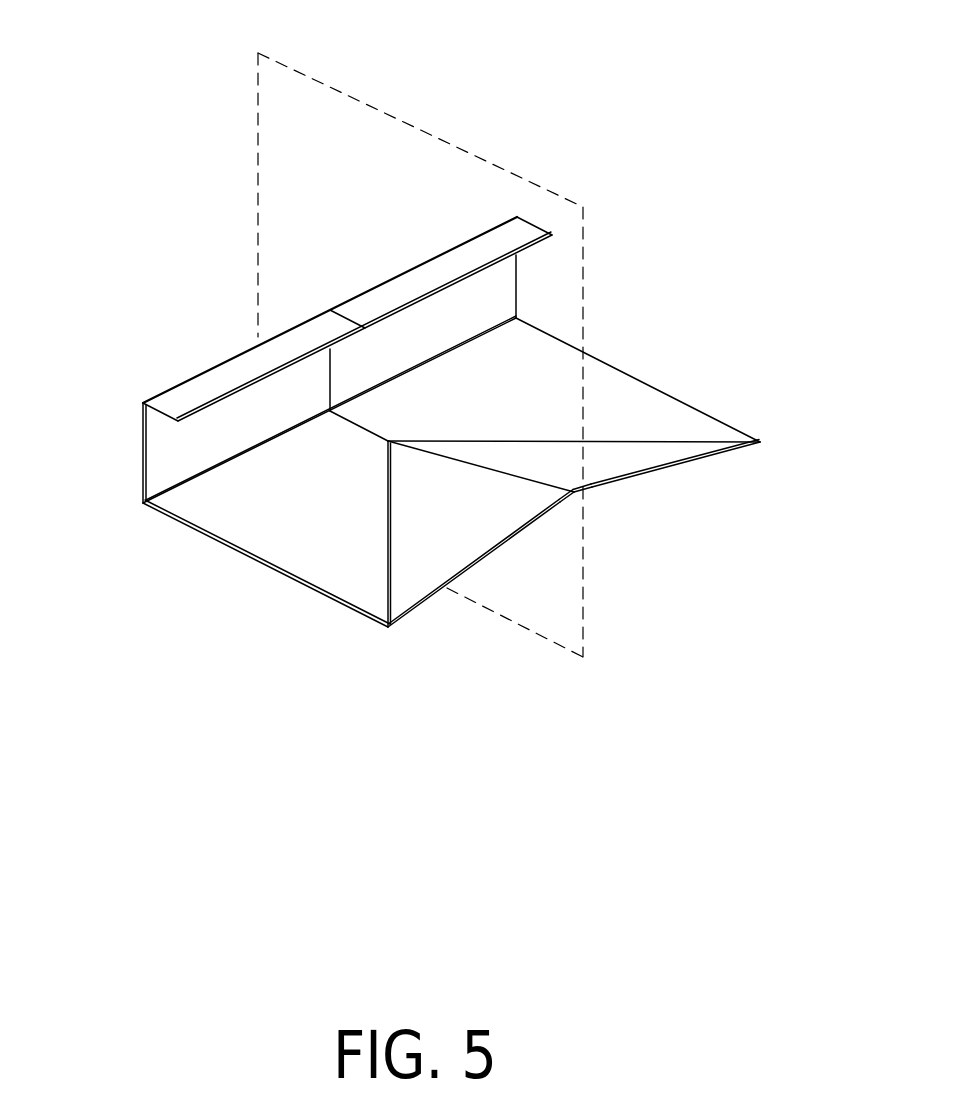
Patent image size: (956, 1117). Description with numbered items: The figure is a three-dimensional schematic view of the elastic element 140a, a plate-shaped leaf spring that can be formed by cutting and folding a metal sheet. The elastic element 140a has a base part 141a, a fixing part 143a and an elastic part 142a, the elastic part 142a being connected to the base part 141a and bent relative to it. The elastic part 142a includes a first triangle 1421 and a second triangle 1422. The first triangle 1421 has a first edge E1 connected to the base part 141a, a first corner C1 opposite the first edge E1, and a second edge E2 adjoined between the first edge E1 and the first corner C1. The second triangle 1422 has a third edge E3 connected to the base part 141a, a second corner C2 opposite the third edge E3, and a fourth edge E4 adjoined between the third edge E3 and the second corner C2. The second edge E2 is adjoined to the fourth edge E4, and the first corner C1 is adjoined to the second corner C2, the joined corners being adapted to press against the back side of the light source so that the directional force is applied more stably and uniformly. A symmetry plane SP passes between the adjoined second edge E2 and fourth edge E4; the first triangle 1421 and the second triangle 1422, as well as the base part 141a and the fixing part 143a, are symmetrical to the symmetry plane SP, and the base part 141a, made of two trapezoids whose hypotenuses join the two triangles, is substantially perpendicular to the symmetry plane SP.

The elastic element 140a is at (105, 100).
The base part 141a is at (280, 547).
The elastic part 142a is at (742, 540).
The first triangle 1421 is at (487, 522).
The second triangle 1422 is at (610, 465).
The fixing part 143a is at (182, 401).
The symmetry plane SP is at (328, 83).
The first edge E1 is at (392, 560).
The second edge E2 is at (463, 461).
The third edge E3 is at (630, 440).
The fourth edge E4 is at (507, 473).
The first corner C1 is at (572, 496).
The second corner C2 is at (578, 496).